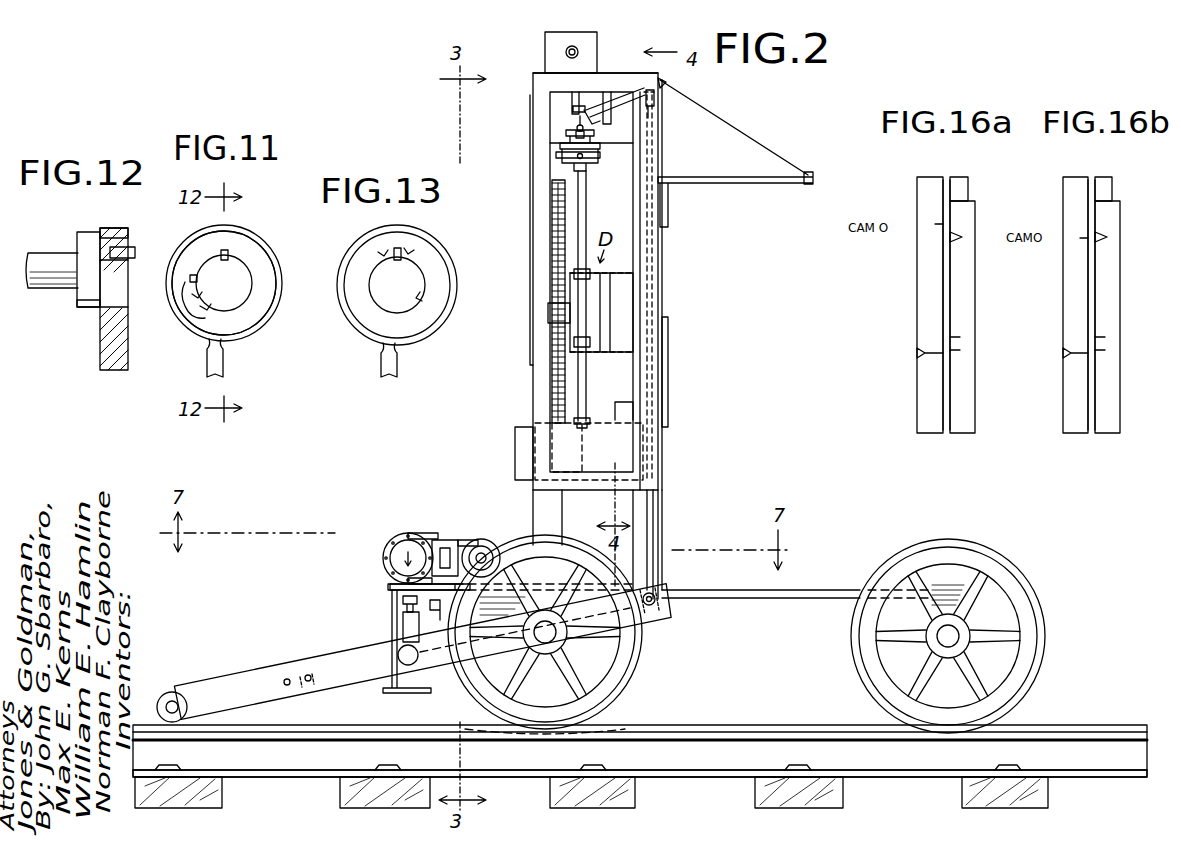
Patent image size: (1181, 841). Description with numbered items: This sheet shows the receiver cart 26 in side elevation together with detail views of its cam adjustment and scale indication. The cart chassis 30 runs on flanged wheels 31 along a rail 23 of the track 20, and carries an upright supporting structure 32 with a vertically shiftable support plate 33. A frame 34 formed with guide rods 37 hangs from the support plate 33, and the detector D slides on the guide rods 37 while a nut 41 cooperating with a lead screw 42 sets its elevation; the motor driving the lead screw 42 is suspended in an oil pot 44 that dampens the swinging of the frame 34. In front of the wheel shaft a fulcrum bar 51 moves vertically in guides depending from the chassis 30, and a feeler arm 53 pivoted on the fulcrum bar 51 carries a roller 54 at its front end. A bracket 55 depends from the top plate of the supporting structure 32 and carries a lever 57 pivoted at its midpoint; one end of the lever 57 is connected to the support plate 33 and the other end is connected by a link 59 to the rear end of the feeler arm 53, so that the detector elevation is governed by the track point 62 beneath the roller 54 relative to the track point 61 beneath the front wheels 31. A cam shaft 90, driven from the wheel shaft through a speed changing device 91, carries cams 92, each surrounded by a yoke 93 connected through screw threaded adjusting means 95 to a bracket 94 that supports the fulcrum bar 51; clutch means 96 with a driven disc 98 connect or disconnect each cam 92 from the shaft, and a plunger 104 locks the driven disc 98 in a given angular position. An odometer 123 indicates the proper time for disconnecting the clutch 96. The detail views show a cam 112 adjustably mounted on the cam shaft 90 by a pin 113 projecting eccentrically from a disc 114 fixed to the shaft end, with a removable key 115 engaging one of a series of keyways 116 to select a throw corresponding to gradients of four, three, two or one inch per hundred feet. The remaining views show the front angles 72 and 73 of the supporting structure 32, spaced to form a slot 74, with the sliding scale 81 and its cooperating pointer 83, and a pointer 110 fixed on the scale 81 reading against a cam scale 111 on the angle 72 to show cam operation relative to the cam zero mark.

In FIG. 2, the railroad ties 20 is at (1082, 716).
In FIG. 2, the rail 23 is at (725, 728).
In FIG. 2, the receiver cart 26 is at (510, 134).
In FIG. 2, the cart chassis 30 is at (816, 594).
In FIG. 2, the flanged wheels 31 is at (638, 654).
In FIG. 2, the upright supporting structure 32 is at (526, 391).
In FIG. 2, the support plate 33 is at (550, 145).
In FIG. 2, the frame 34 is at (595, 390).
In FIG. 2, the guide rods 37 is at (586, 211).
In FIG. 2, the nut 41 is at (548, 313).
In FIG. 2, the lead screw 42 is at (546, 192).
In FIG. 2, the oil pot 44 is at (515, 440).
In FIG. 2, the fulcrum bar 51 is at (384, 646).
In FIG. 2, the feeler arm 53 is at (270, 680).
In FIG. 2, the roller 54 is at (184, 690).
In FIG. 2, the bracket 55 is at (604, 96).
In FIG. 2, the lever 57 is at (592, 102).
In FIG. 2, the link 59 is at (658, 512).
In FIG. 2, the track point 61 is at (642, 753).
In FIG. 2, the track point 62 is at (640, 761).
In FIG. 16a, the angle 72 is at (928, 174).
In FIG. 16b, the angle 72 is at (1076, 174).
In FIG. 16a, the angle 73 is at (965, 178).
In FIG. 16b, the angle 73 is at (1112, 182).
In FIG. 16a, the slot 74 is at (944, 176).
In FIG. 16b, the slot 74 is at (1094, 176).
In FIG. 16a, the scale 81 is at (966, 304).
In FIG. 16b, the scale 81 is at (1104, 300).
In FIG. 16a, the pointer 83 is at (918, 362).
In FIG. 16b, the pointer 83 is at (1066, 364).
In FIG. 12, the cam shaft 90 is at (44, 260).
In FIG. 2, the speed changing device 91 is at (482, 538).
In FIG. 2, the cam 92 is at (382, 554).
In FIG. 12, the yoke 93 is at (116, 228).
In FIG. 11, the yoke 93 is at (265, 240).
In FIG. 2, the bracket 94 is at (402, 617).
In FIG. 2, the screw threaded adjusting means 95 is at (402, 602).
In FIG. 2, the clutch means 96 is at (372, 541).
In FIG. 2, the driven disc 98 is at (384, 562).
In FIG. 2, the plunger 104 is at (418, 516).
In FIG. 16a, the pointer 110 is at (966, 236).
In FIG. 16b, the pointer 110 is at (1104, 236).
In FIG. 16a, the cam scale 111 is at (938, 228).
In FIG. 16b, the cam scale 111 is at (1078, 238).
In FIG. 12, the cam 112 is at (104, 335).
In FIG. 11, the cam 112 is at (264, 268).
In FIG. 13, the cam 112 is at (416, 335).
In FIG. 12, the pin 113 is at (132, 314).
In FIG. 11, the pin 113 is at (240, 300).
In FIG. 13, the pin 113 is at (388, 312).
In FIG. 12, the disc 114 is at (78, 314).
In FIG. 12, the removable key 115 is at (128, 248).
In FIG. 11, the removable key 115 is at (228, 250).
In FIG. 13, the removable key 115 is at (402, 252).
In FIG. 11, the keyways 116 is at (196, 307).
In FIG. 13, the keyways 116 is at (356, 236).
In FIG. 2, the odometer 123 is at (545, 45).